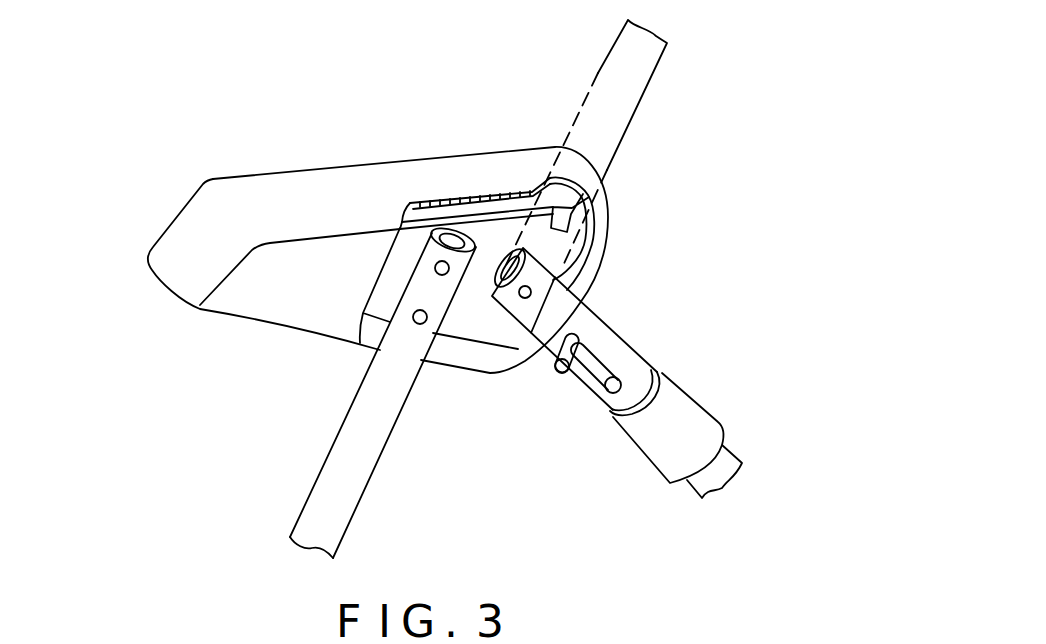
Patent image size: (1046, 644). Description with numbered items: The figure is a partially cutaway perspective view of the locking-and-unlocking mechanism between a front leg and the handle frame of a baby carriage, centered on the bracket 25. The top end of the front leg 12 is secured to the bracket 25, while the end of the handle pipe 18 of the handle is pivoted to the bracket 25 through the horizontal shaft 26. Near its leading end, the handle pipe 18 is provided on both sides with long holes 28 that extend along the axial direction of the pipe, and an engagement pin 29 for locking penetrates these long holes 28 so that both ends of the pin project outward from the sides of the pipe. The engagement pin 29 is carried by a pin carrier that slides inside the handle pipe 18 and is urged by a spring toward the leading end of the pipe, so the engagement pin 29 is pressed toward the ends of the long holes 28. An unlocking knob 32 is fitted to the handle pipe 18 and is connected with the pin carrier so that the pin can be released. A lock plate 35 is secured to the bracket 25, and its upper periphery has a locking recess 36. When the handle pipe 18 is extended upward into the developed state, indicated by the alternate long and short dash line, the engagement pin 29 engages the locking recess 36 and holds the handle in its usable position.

The front leg 12 is at (336, 439).
The handle pipe 18 is at (623, 352).
The bracket 25 is at (343, 170).
The horizontal shaft 26 is at (524, 298).
The long holes 28 is at (610, 357).
The engagement pin 29 is at (489, 312).
The unlocking knob 32 is at (647, 456).
The lock plate 35 is at (487, 228).
The locking recess 36 is at (607, 183).